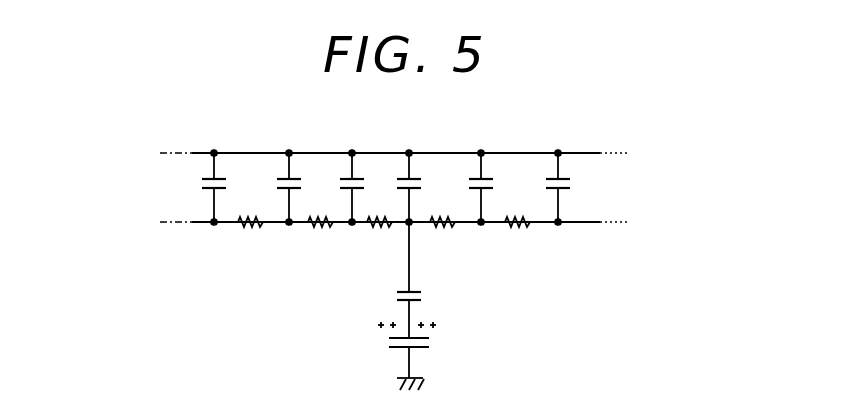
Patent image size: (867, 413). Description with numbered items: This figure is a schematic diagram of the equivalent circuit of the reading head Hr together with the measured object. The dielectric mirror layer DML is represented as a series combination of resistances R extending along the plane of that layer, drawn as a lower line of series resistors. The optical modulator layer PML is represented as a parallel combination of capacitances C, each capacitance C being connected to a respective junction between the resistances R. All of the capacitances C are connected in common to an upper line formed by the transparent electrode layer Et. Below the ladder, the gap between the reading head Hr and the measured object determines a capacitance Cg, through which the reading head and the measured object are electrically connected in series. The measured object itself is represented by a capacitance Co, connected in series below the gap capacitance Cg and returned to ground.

The transparent electrode layer Et is at (514, 153).
The optical modulator layer PML is at (208, 209).
The dielectric mirror layer DML is at (229, 228).
The reading head Hr is at (636, 195).
The capacitances C is at (396, 187).
The resistances R is at (384, 237).
The capacitance Cg is at (426, 295).
The capacitance Co is at (432, 342).